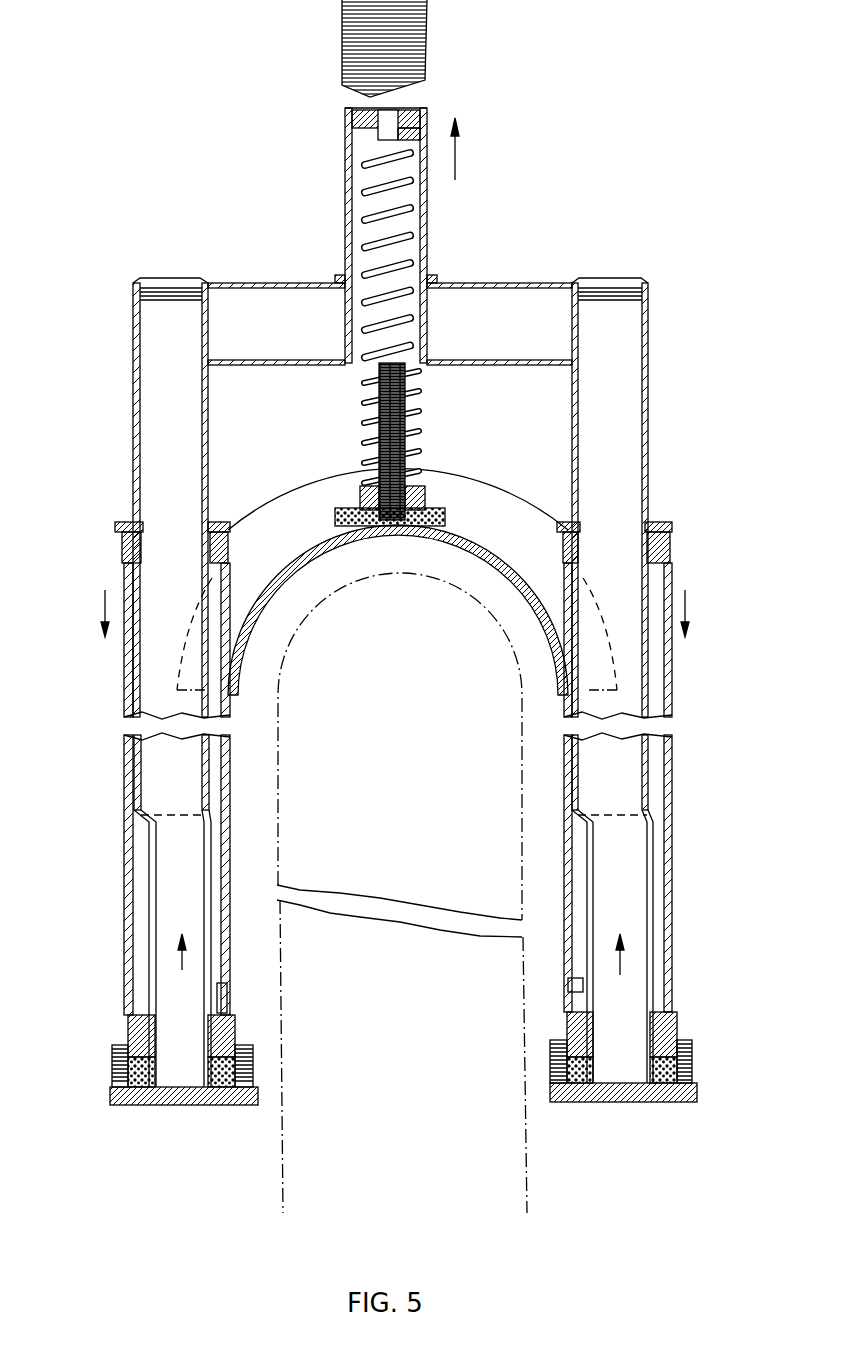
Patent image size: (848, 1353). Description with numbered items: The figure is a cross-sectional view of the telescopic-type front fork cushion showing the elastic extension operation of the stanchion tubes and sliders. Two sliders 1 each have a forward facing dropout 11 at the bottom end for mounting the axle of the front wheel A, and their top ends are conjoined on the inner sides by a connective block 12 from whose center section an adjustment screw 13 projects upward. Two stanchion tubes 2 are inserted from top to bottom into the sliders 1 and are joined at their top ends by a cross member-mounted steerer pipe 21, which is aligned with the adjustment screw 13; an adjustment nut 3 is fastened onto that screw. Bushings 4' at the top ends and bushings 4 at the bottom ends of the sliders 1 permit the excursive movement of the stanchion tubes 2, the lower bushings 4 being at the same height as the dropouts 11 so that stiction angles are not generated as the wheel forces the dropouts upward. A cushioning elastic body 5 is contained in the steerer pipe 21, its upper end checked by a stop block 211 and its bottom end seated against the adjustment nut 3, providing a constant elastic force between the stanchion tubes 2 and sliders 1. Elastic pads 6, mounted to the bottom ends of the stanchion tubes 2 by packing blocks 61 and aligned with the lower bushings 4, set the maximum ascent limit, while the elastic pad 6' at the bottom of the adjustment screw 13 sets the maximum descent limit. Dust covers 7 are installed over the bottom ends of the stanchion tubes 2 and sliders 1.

The slider 1 is at (124, 680).
The stanchion tube 2 is at (128, 389).
The adjustment nut 3 is at (370, 485).
The bushing 4 is at (409, 1015).
The bushing 4' is at (408, 522).
The cushioning elastic body 5 is at (380, 193).
The elastic pad 6 is at (411, 1060).
The elastic pad 6' is at (254, 380).
The dust cover 7 is at (112, 1058).
The dropout 11 is at (222, 998).
The connective block 12 is at (293, 508).
The adjustment screw 13 is at (387, 423).
The cross member-mounted steerer pipe 21 is at (343, 217).
The stop block 211 is at (424, 107).
The packing block 61 is at (137, 1105).
The front wheel A is at (290, 800).